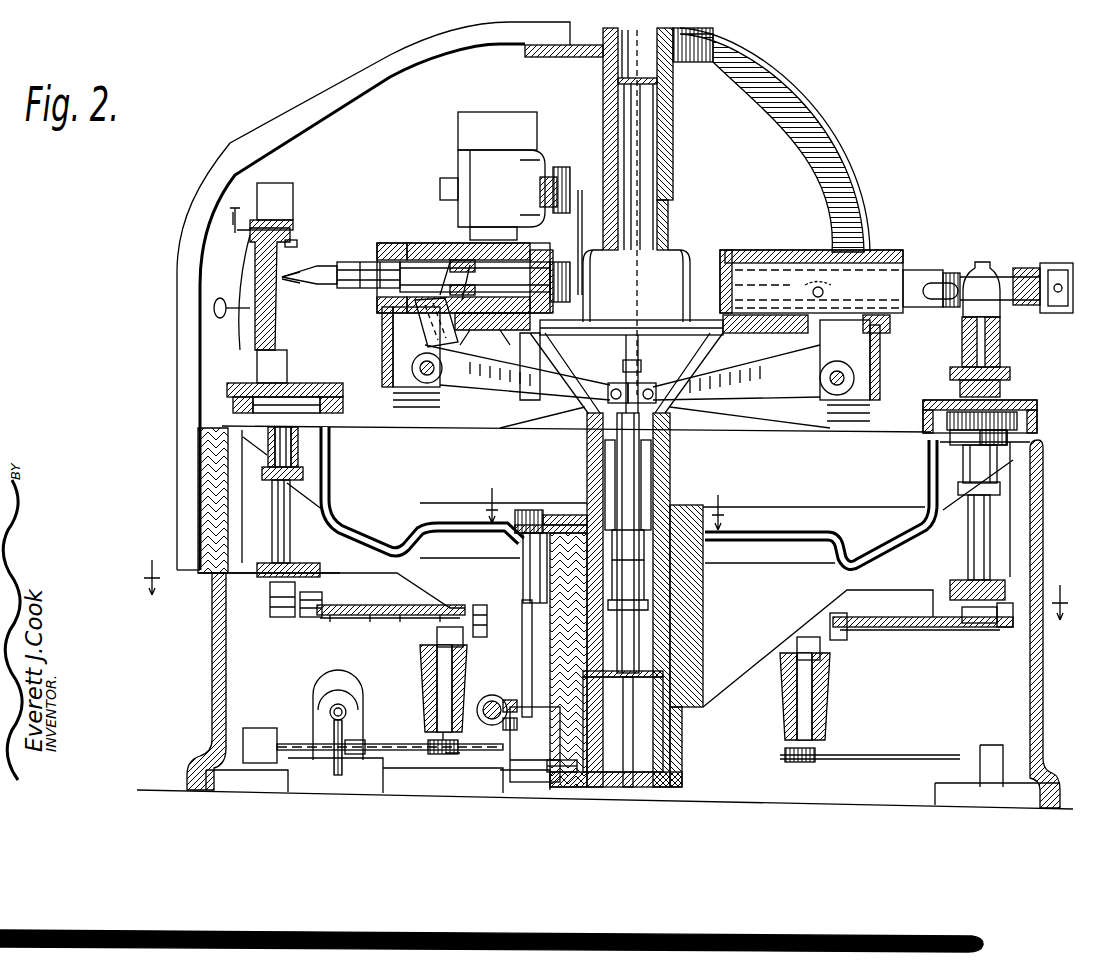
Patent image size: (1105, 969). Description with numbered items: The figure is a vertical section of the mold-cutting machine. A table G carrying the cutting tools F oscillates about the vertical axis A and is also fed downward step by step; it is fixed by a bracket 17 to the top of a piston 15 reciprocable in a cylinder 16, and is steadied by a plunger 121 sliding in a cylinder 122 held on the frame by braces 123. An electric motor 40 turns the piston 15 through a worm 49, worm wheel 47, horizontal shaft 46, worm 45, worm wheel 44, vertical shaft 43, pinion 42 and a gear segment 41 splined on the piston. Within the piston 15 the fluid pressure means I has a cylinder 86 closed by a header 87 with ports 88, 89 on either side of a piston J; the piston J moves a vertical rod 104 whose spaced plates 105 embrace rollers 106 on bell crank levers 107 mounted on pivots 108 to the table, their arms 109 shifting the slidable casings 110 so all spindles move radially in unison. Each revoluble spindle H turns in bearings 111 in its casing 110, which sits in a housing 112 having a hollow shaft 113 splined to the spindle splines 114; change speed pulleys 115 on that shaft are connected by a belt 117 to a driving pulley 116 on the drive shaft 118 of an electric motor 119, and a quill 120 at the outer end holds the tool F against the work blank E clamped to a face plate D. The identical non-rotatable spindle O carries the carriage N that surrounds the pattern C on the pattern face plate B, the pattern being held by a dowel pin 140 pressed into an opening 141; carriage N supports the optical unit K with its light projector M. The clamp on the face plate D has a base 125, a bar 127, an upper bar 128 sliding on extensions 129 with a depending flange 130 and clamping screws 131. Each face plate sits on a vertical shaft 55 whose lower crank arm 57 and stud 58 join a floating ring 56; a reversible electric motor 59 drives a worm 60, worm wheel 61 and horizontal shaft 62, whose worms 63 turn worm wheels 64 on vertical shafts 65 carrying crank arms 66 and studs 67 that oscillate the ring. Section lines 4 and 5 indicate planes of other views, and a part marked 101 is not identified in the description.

The braces 123 is at (347, 100).
The cylinder 122 is at (673, 110).
The plunger 121 is at (660, 140).
The vertical axis A is at (640, 245).
The electric motor 119 is at (460, 163).
The drive shaft 118 is at (546, 177).
The driving pulley 116 is at (563, 167).
The belt 117 is at (582, 240).
The change speed pulleys 115 is at (558, 262).
The bearings 111 is at (385, 243).
The revoluble spindle H is at (412, 262).
The casing 110 is at (438, 262).
The housing 112 is at (458, 260).
The quill 120 is at (338, 262).
The tool F is at (292, 283).
The work blank E is at (280, 322).
The extensions 129 is at (288, 203).
The clamping bar 128 is at (293, 226).
The flange 130 is at (292, 240).
The clamping screws 131 is at (233, 233).
The base 125 is at (257, 388).
The bar 127 is at (290, 372).
The face plate D is at (320, 383).
The table G is at (382, 340).
The arms 109 is at (415, 380).
The pivot 108 is at (430, 380).
The external splines 114 is at (470, 330).
The hollow shaft 113 is at (505, 332).
The member 101 is at (530, 338).
The bracket 17 is at (560, 358).
The rollers 106 is at (612, 384).
The plates 105 is at (650, 383).
The bell crank levers 107 is at (480, 368).
The non-rotatable spindle O is at (880, 270).
The carriage N is at (950, 268).
The optical unit K is at (1027, 268).
The light projector M is at (1058, 263).
The model C is at (1002, 342).
The dowel pin 140 is at (1010, 364).
The opening 141 is at (1000, 385).
The face plate B is at (1040, 412).
The port 89 is at (605, 455).
The port 88 is at (651, 450).
The cylinder 86 is at (650, 470).
The vertical rod 104 is at (648, 490).
The fluid pressure means I is at (645, 505).
The piston J is at (650, 515).
The pinion 42 is at (526, 510).
The gear segment 41 is at (552, 515).
The header 87 is at (580, 515).
The section line 5 is at (605, 508).
The section line 4 is at (603, 590).
The vertical shaft 55 is at (290, 548).
The stud 58 is at (323, 600).
The crank arm 66 is at (450, 627).
The vertical shaft 43 is at (523, 585).
The stud 67 is at (487, 615).
The crank arm 57 is at (290, 610).
The floating ring 56 is at (355, 618).
The reversible electric motor 59 is at (360, 690).
The vertical shaft 65 is at (437, 690).
The worm wheel 47 is at (495, 695).
The worm 45 is at (490, 700).
The horizontal shaft 46 is at (508, 700).
The worm wheel 61 is at (334, 728).
The worm 60 is at (346, 712).
The horizontal shaft 62 is at (393, 744).
The piston 15 is at (685, 600).
The cylinder 16 is at (680, 632).
The worm wheel 44 is at (548, 720).
The worm wheel 64 is at (428, 750).
The worms 63 is at (440, 755).
The worm 49 is at (490, 752).
The electric motor 40 is at (520, 770).